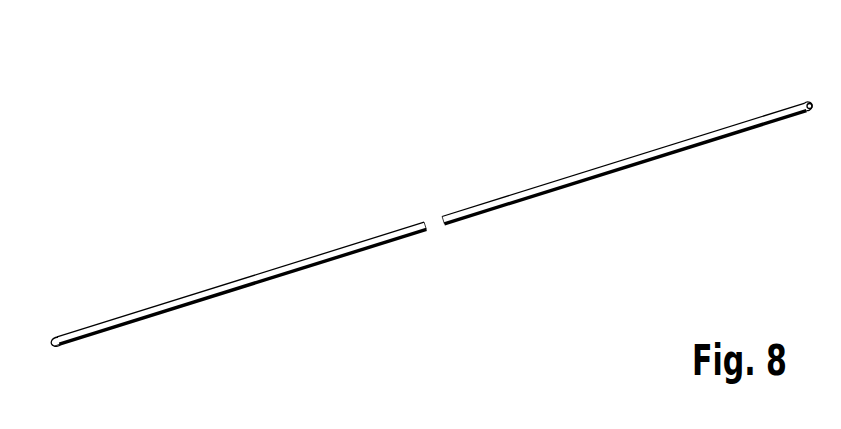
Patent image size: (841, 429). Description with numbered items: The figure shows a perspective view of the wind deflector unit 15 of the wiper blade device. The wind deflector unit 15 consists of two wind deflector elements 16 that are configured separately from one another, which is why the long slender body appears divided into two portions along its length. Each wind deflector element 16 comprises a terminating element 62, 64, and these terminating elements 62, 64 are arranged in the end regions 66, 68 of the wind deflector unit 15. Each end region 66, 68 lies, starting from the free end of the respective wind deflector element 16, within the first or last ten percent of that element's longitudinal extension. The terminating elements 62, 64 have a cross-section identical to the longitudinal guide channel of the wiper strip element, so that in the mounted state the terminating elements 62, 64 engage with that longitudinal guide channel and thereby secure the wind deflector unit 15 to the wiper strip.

The wind deflector unit 15 is at (257, 222).
The wind deflector elements 16 is at (473, 208).
The terminating element 62 is at (60, 347).
The terminating element 64 is at (810, 112).
The end region 66 is at (62, 330).
The end region 68 is at (793, 100).